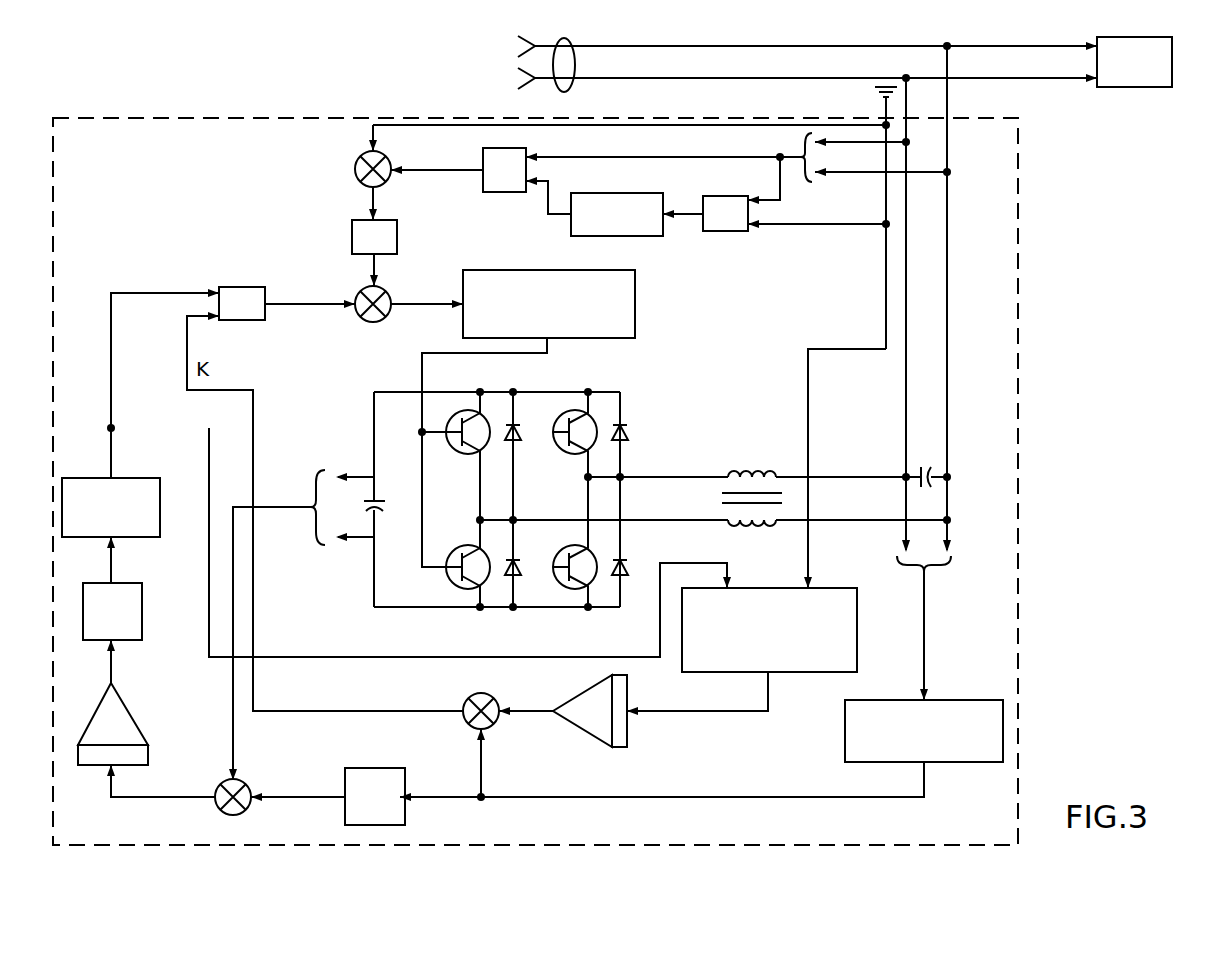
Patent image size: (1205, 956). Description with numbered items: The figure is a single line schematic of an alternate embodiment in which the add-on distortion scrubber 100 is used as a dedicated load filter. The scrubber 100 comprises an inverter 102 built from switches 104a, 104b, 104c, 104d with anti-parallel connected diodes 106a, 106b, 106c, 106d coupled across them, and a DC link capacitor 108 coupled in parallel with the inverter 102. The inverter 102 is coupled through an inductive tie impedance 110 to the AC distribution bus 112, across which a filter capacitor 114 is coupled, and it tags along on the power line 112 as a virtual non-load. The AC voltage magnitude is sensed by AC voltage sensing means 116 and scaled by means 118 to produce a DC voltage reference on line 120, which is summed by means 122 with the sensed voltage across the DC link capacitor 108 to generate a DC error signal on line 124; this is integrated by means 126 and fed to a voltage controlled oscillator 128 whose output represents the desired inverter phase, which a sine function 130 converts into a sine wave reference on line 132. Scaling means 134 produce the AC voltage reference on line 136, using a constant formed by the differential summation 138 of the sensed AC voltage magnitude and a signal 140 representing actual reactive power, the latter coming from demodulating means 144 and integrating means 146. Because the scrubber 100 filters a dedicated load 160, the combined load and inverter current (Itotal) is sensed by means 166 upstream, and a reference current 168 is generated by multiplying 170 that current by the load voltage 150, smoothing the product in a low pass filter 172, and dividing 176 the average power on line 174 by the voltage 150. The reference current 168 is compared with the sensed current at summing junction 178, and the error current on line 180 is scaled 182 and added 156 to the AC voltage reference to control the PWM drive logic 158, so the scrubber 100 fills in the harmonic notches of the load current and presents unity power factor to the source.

The add-on distortion scrubber 100 is at (1017, 302).
The inverter 102 is at (549, 506).
The switch 104a is at (458, 410).
The switch 104b is at (448, 580).
The switch 104c is at (568, 408).
The switch 104d is at (557, 590).
The anti-parallel connected diode 106a is at (518, 426).
The anti-parallel connected diode 106b is at (509, 577).
The anti-parallel connected diode 106c is at (626, 440).
The anti-parallel connected diode 106d is at (628, 565).
The DC link capacitor 108 is at (372, 541).
The inductive tie impedance 110 is at (753, 472).
The AC distribution bus 112 is at (566, 92).
The filter capacitor 114 is at (930, 468).
The AC voltage sensing means 116 is at (980, 700).
The scaling means 118 is at (403, 820).
The DC voltage reference line 120 is at (318, 797).
The summing means 122 is at (233, 815).
The DC error signal line 124 is at (187, 797).
The integrating means 126 is at (138, 722).
The voltage controlled oscillator 128 is at (142, 637).
The sine function 130 is at (125, 478).
The sine wave reference waveform line 132 is at (111, 312).
The scaling means 134 is at (242, 287).
The AC voltage reference waveform line 136 is at (322, 300).
The differential summation 138 is at (472, 693).
The reactive power signal 140 is at (522, 704).
The reactive power demodulating means 144 is at (810, 675).
The integrating means 146 is at (612, 748).
The load voltage 150 is at (607, 158).
The adding means 156 is at (362, 322).
The PWM drive logic 158 is at (635, 322).
The dedicated load 160 is at (1172, 87).
The current sensing means 166 is at (897, 100).
The reference current 168 is at (476, 165).
The multiplier 170 is at (735, 231).
The low pass filter 172 is at (655, 236).
The average power line 174 is at (548, 197).
The divider 176 is at (507, 147).
The summing junction 178 is at (356, 176).
The error current signal line 180 is at (372, 193).
The scaling means 182 is at (397, 232).